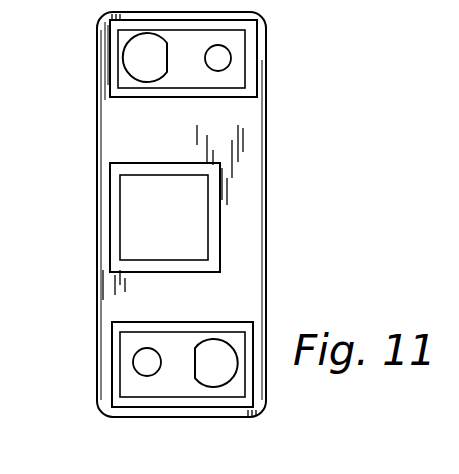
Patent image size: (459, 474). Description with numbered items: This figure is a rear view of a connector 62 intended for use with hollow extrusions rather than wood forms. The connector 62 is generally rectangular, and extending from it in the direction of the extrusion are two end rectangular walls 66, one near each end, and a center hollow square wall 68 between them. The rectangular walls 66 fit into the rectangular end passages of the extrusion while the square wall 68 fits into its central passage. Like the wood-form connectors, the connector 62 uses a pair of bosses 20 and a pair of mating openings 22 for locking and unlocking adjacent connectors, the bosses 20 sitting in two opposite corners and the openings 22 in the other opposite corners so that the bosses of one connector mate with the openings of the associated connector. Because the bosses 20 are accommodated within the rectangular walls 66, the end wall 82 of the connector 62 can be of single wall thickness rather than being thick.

The boss 20 is at (140, 365).
The mating opening 22 is at (137, 58).
The connector 62 is at (97, 148).
The end rectangular wall 66 is at (250, 58).
The center hollow square wall 68 is at (215, 195).
The end wall 82 is at (250, 240).